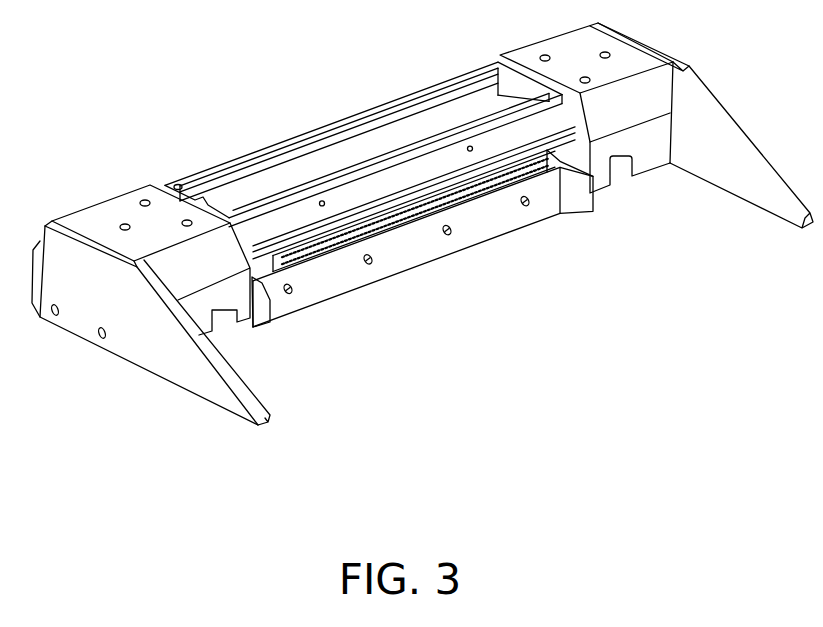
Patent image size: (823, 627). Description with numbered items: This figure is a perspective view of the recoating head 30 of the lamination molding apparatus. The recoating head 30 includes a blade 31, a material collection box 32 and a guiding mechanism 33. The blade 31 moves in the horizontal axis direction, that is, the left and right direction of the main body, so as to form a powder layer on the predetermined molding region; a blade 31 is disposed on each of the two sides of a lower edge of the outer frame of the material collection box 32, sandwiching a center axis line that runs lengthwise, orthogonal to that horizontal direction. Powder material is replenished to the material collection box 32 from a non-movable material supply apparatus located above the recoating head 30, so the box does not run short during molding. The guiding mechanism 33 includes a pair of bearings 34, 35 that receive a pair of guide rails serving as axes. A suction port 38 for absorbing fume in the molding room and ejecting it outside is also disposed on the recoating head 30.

The recoating head 30 is at (315, 102).
The blade 31 is at (435, 260).
The material collection box 32 is at (418, 123).
The guiding mechanism 33 is at (645, 137).
The bearing 34 is at (647, 167).
The bearing 35 is at (250, 327).
The suction port 38 is at (478, 197).